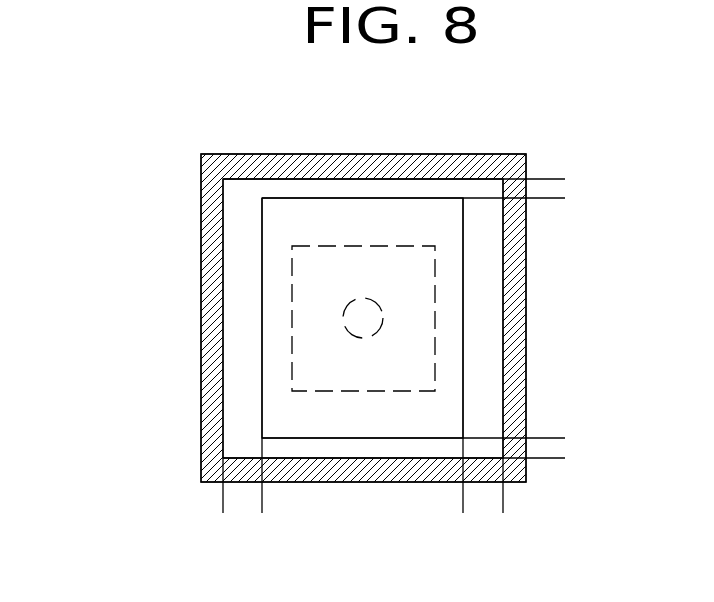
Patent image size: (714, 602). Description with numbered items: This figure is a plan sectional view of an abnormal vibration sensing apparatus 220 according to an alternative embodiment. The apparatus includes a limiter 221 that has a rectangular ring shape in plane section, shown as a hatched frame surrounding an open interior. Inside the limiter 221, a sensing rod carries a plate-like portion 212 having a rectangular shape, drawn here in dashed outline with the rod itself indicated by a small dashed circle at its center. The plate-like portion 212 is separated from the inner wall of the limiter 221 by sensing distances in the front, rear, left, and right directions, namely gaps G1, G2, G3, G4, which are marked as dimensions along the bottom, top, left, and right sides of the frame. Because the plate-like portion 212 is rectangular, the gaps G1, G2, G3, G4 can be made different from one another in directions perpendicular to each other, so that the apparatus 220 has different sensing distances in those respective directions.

The abnormal vibration sensing apparatus 220 is at (128, 152).
The limiter 221 is at (212, 274).
The plate-like portion 212 is at (277, 358).
The gap G1 is at (561, 400).
The gap G2 is at (562, 140).
The gap G3 is at (300, 506).
The gap G4 is at (545, 506).